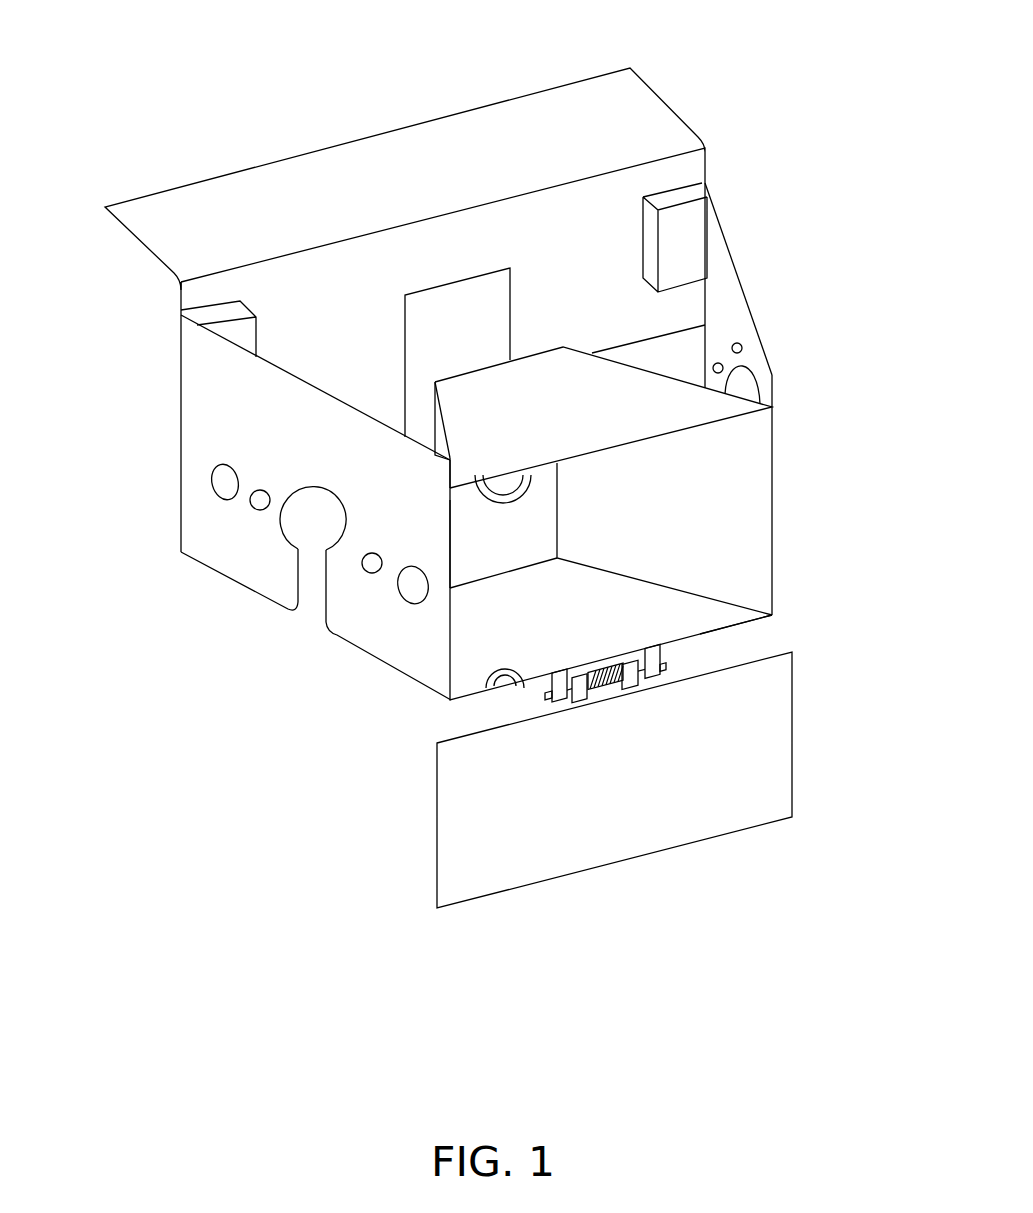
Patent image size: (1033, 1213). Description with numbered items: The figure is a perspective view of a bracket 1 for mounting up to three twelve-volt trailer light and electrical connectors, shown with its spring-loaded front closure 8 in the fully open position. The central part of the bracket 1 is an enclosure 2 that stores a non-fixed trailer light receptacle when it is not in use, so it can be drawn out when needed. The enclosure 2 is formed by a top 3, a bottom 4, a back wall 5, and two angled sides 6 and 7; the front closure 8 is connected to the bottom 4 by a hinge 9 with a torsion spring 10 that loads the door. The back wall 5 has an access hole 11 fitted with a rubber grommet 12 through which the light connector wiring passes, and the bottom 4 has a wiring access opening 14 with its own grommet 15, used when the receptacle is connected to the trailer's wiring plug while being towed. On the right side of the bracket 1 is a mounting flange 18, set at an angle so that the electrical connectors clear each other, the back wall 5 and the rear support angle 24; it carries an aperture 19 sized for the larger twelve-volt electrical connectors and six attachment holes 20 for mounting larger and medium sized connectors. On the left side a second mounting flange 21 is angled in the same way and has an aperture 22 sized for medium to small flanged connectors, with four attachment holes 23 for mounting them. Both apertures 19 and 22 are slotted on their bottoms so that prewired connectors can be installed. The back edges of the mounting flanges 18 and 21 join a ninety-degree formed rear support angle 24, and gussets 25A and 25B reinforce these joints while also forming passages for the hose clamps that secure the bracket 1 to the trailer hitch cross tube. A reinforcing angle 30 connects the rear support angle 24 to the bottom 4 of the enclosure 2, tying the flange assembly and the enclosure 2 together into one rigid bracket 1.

The bracket 1 is at (143, 250).
The enclosure 2 is at (670, 380).
The top 3 is at (567, 423).
The bottom 4 is at (745, 623).
The back wall 5 is at (512, 527).
The angled side 6 is at (431, 416).
The angled side 7 is at (777, 508).
The front closure 8 is at (618, 864).
The hinge 9 is at (669, 653).
The torsion spring 10 is at (597, 697).
The access hole 11 is at (509, 482).
The rubber grommet 12 is at (535, 497).
The wiring access opening 14 is at (494, 689).
The grommet 15 is at (504, 652).
The mounting flange 18 is at (745, 262).
The aperture 19 is at (758, 372).
The attachment holes 20 is at (723, 357).
The mounting flange 21 is at (212, 572).
The aperture 22 is at (288, 510).
The attachment holes 23 is at (211, 482).
The rear support angle 24 is at (364, 135).
The gusset 25A is at (232, 330).
The gusset 25B is at (685, 210).
The reinforcing angle 30 is at (402, 367).